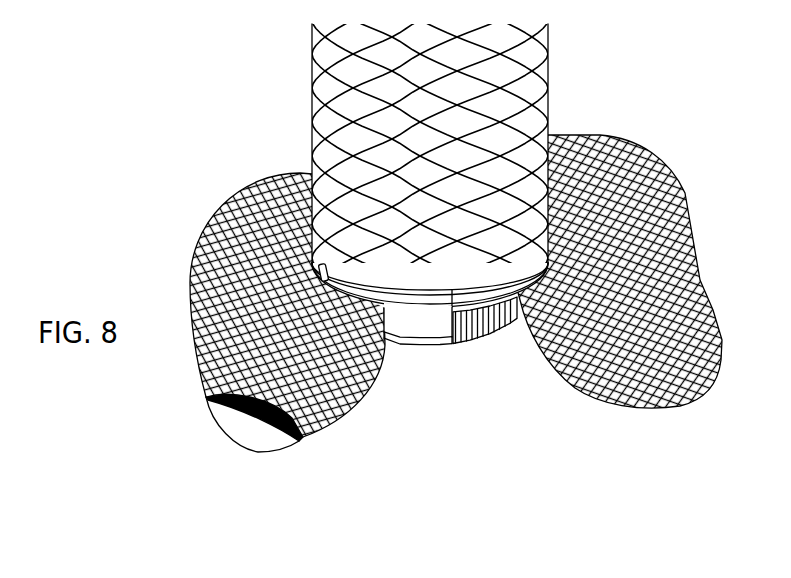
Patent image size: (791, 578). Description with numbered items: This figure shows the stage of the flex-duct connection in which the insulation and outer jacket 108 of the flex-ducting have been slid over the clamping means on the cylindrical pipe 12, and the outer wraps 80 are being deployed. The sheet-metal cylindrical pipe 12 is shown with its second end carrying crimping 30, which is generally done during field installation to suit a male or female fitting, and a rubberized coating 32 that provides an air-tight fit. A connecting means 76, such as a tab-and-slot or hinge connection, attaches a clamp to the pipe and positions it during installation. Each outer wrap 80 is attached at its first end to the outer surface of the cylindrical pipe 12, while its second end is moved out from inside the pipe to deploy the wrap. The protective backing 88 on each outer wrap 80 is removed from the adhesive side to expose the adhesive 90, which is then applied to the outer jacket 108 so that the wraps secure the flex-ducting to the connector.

The outer jacket 108 is at (468, 214).
The outer wrap 80 is at (433, 286).
The connecting means 76 is at (279, 221).
The cylindrical pipe 12 is at (425, 343).
The rubberized coating 32 is at (418, 369).
The crimping 30 is at (485, 346).
The protective backing 88 is at (274, 432).
The adhesive 90 is at (227, 428).